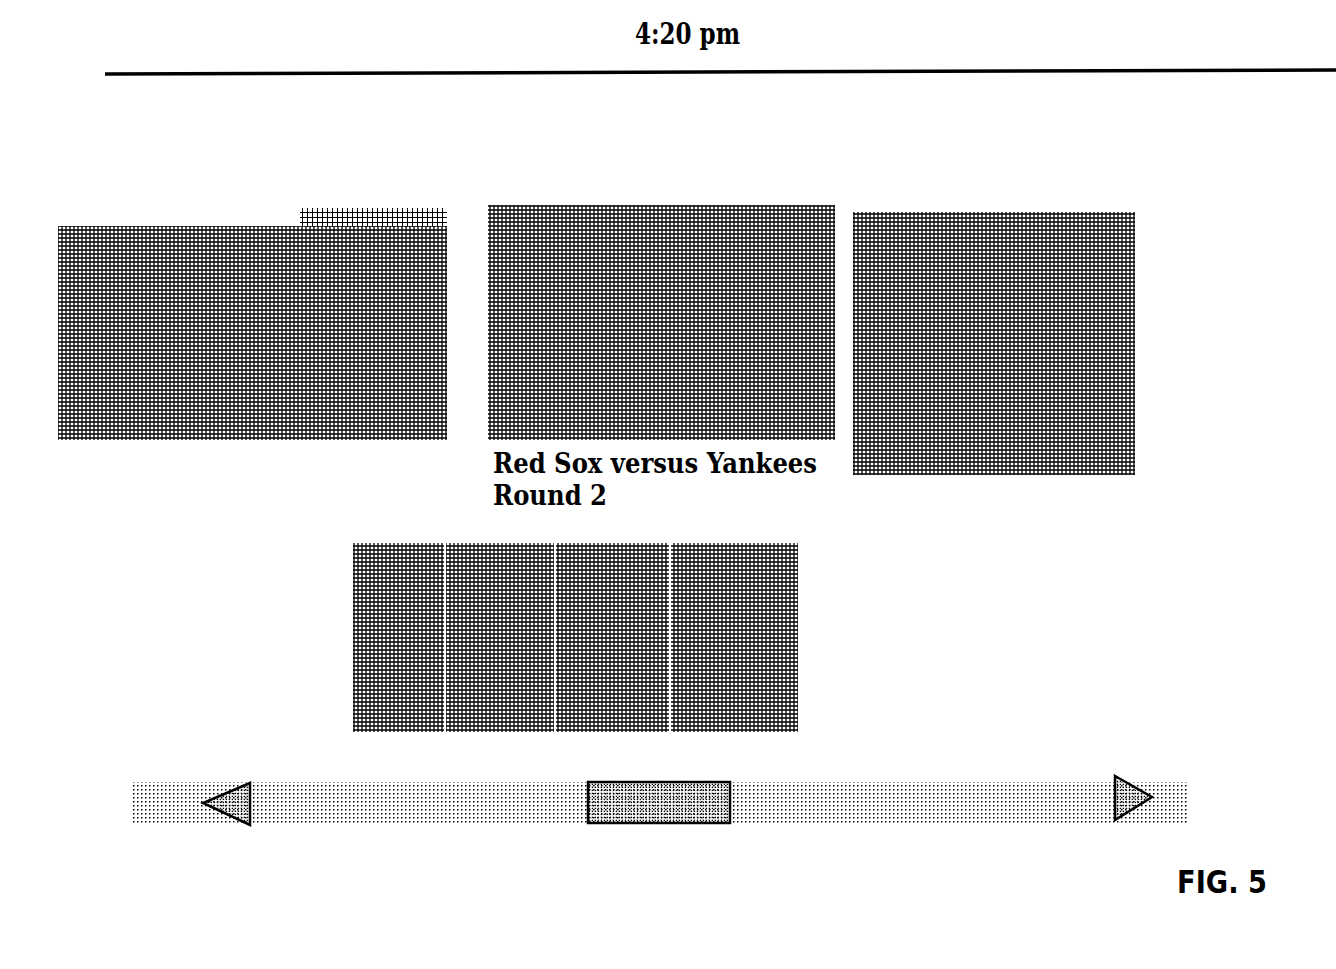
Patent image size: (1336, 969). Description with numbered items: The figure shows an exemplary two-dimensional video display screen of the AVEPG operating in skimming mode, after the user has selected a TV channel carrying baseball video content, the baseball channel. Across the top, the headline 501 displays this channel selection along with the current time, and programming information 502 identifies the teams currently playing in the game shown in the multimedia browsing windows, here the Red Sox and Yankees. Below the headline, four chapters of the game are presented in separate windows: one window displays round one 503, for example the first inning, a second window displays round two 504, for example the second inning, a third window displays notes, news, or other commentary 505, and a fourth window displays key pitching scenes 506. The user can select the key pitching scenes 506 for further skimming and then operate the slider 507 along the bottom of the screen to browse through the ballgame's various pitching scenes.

The headline 501 is at (117, 43).
The programming information 502 is at (1147, 107).
The round 1 MBW 503 is at (308, 197).
The round 2 MBW 504 is at (562, 193).
The notes and news MBW 505 is at (1173, 277).
The key pitching scenes MBW 506 is at (837, 620).
The slider 507 is at (805, 832).